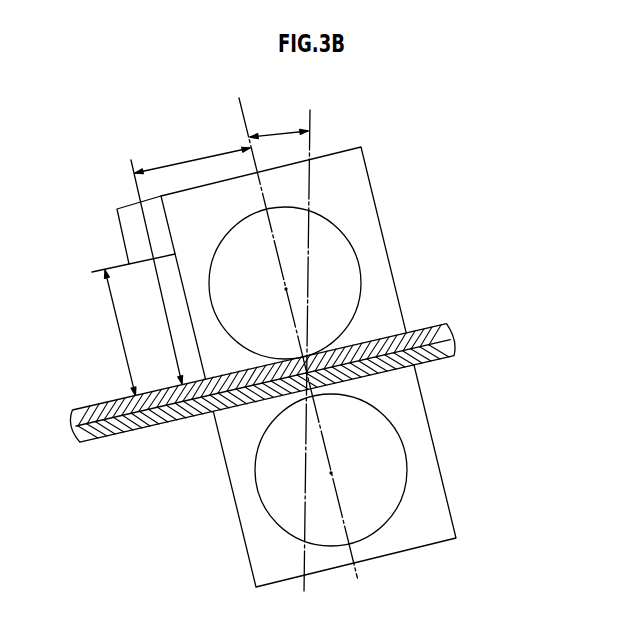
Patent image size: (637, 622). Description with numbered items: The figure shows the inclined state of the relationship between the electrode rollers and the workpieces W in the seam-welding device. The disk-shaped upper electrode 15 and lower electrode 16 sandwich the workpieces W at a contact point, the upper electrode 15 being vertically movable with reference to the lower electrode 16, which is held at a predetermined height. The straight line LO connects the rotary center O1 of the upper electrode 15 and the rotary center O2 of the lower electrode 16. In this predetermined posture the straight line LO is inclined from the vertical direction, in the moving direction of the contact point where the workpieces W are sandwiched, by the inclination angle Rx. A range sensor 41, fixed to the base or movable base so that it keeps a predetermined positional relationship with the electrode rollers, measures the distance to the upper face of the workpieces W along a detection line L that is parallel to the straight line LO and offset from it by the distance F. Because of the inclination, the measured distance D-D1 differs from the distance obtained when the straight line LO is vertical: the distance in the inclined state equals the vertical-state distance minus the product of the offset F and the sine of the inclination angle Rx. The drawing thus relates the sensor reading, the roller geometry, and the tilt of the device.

The upper electrode 15 is at (333, 218).
The lower electrode 16 is at (397, 423).
The range sensor 41 is at (121, 233).
The workpieces W is at (432, 323).
The straight line L0 LO is at (281, 334).
The rotary center of the upper electrode O1 is at (286, 289).
The rotary center of the lower electrode O2 is at (331, 473).
The distance F is at (192, 153).
The inclination angle Rx is at (279, 122).
The detection line L is at (169, 318).
The distance D1 D-D1 is at (100, 332).